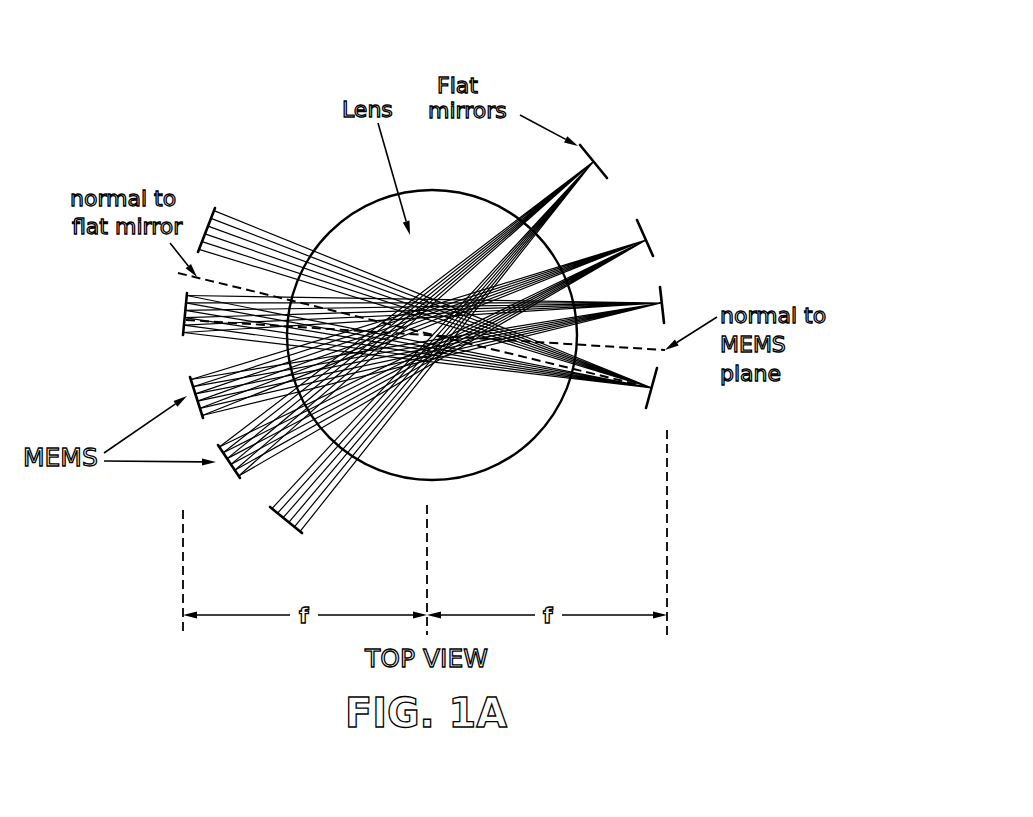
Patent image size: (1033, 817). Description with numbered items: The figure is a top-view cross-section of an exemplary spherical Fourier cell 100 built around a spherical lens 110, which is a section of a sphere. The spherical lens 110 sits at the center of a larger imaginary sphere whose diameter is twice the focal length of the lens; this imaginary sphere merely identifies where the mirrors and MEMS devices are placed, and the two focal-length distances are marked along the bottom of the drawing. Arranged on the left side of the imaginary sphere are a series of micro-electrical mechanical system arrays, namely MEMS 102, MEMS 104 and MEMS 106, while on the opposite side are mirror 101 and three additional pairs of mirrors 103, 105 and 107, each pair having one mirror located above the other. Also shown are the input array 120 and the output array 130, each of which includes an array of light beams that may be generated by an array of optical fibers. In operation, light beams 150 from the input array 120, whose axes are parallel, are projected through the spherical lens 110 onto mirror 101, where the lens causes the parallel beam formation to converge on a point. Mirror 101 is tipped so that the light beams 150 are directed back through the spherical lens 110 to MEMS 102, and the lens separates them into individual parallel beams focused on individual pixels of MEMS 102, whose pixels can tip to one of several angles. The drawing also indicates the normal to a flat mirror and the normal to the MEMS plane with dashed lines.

The spherical Fourier cell 100 is at (603, 89).
The mirror 101 is at (605, 172).
The MEMS 102 is at (229, 466).
The mirror pair 103 is at (640, 222).
The MEMS 104 is at (190, 386).
The mirror pair 105 is at (663, 292).
The MEMS 106 is at (183, 325).
The mirror pair 107 is at (649, 400).
The spherical lens 110 is at (372, 196).
The input array 120 is at (258, 541).
The output array 130 is at (225, 199).
The light beams 150 is at (334, 496).